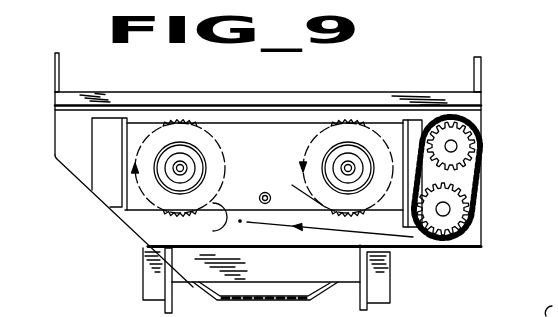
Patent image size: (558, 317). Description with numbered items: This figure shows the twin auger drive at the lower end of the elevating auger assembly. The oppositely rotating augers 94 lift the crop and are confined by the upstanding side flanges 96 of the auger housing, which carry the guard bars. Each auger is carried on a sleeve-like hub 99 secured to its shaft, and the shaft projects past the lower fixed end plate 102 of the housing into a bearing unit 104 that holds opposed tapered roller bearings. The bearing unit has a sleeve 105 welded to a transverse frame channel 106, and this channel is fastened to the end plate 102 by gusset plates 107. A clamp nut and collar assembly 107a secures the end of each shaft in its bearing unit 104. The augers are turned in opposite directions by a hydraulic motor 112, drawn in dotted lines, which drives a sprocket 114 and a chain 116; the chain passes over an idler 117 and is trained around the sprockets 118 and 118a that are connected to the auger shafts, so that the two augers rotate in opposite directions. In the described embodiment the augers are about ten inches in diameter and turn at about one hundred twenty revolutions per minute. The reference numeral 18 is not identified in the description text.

The tape applying head 18 is at (398, 82).
The auger 94 is at (541, 268).
The upstanding side flange 96 is at (59, 63).
The sleeve-like hub 99 is at (548, 300).
The lower fixed end plate 102 is at (73, 162).
The bearing unit 104 is at (278, 176).
The sleeve 105 is at (322, 155).
The transverse frame channel 106 is at (133, 216).
The gusset plate 107 is at (122, 195).
The clamp nut and collar assembly 107a is at (338, 175).
The hydraulic motor 112 is at (485, 118).
The sprocket 114 is at (460, 149).
The chain 116 is at (481, 176).
The idler 117 is at (458, 207).
The sprocket 118 is at (203, 232).
The sprocket 118a is at (348, 117).